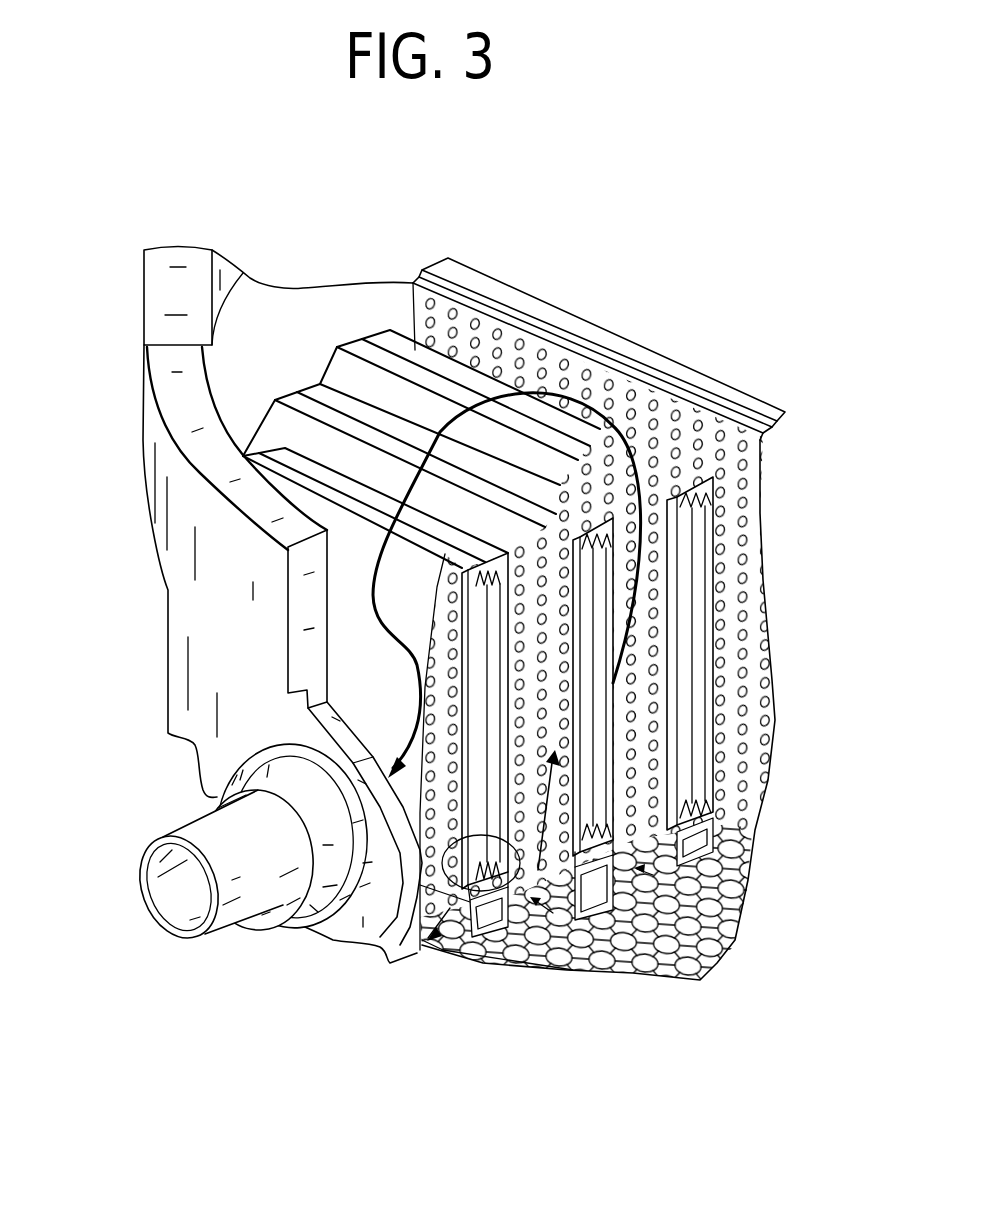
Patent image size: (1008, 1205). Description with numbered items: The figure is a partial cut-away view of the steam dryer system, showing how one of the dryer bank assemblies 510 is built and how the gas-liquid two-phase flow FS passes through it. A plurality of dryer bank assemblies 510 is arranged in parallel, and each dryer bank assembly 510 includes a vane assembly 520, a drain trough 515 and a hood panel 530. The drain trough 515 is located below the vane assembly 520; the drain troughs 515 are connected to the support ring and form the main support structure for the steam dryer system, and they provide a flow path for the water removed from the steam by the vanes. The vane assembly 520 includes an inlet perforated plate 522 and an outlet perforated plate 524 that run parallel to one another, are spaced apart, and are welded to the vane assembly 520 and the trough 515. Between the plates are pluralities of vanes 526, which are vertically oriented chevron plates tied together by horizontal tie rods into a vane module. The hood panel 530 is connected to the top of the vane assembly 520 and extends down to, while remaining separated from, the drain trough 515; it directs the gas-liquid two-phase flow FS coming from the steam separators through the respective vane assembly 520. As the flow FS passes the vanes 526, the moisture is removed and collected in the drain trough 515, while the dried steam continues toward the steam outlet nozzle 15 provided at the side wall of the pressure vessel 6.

The pressure vessel 6 is at (190, 677).
The steam outlet nozzle 15 is at (273, 893).
The dryer bank assembly 510 is at (507, 483).
The drain trough 515 is at (422, 940).
The vane assembly 520 is at (512, 910).
The inlet perforated plate 522 is at (440, 627).
The outlet perforated plate 524 is at (507, 617).
The vane 526 is at (490, 672).
The hood panel 530 is at (650, 507).
The gas-liquid two-phase flow FS is at (615, 432).